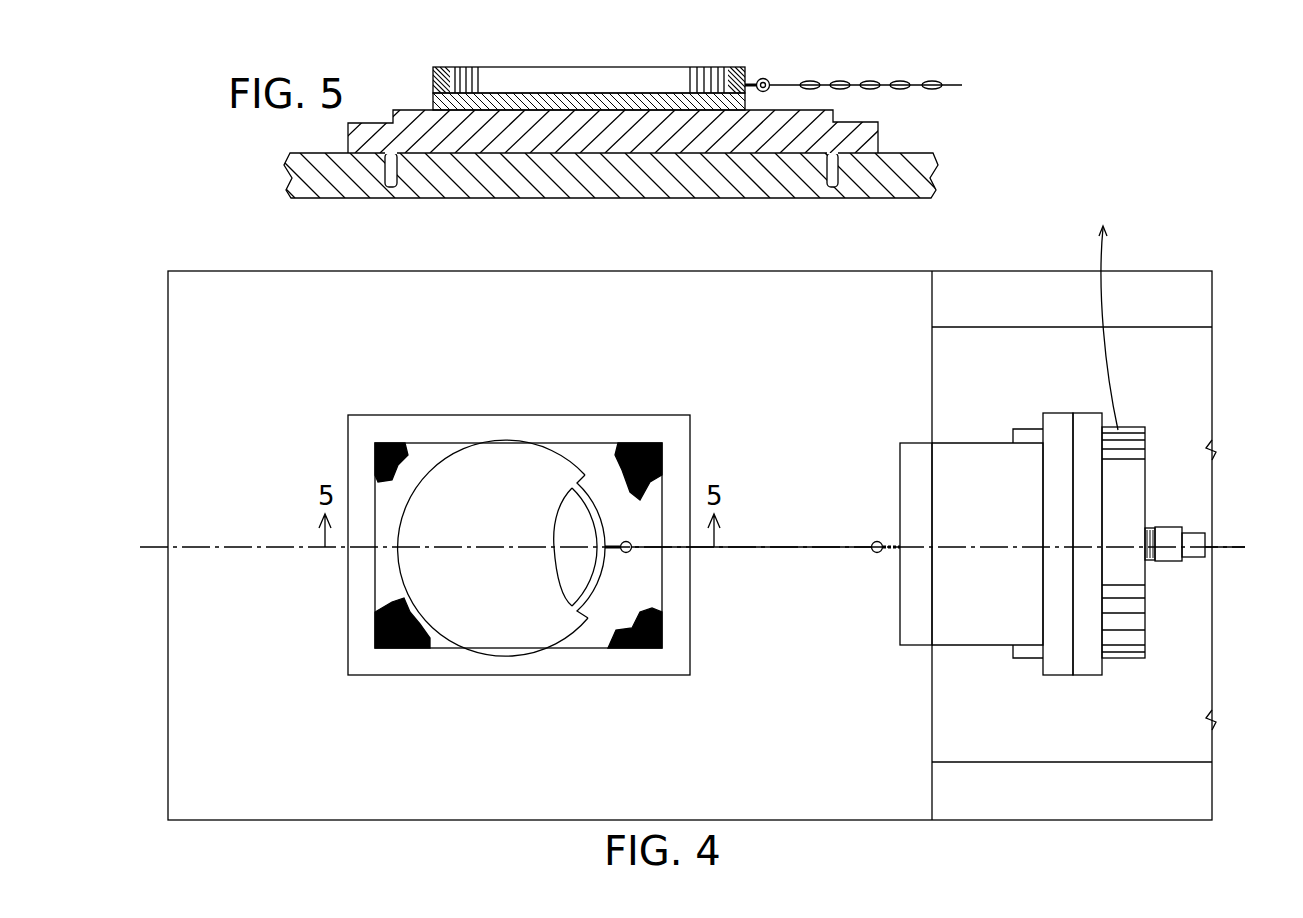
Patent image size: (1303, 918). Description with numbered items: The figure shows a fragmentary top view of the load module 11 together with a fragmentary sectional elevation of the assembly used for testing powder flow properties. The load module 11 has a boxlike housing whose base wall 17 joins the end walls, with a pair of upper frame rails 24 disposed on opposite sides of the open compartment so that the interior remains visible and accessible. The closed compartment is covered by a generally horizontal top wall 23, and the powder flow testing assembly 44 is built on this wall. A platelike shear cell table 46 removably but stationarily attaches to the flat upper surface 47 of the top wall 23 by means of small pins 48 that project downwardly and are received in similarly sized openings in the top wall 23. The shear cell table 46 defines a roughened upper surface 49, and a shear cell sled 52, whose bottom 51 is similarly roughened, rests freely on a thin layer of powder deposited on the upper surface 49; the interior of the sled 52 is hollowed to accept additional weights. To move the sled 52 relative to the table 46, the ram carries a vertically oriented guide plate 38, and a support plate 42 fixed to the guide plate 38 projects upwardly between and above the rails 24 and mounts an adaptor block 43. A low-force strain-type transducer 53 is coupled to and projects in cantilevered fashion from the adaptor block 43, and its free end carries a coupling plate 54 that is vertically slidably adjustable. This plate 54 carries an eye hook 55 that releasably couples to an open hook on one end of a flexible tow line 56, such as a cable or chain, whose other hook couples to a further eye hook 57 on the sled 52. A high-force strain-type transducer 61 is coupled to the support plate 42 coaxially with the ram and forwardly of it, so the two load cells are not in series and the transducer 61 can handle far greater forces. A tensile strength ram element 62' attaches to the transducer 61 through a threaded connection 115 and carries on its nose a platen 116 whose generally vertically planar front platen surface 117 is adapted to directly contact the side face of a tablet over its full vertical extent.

In FIG. 4, the load module 11 is at (232, 260).
In FIG. 4, the base wall 17 is at (1135, 740).
In FIG. 5, the top wall 23 is at (628, 194).
In FIG. 4, the upper frame rails 24 is at (1060, 292).
In FIG. 4, the guide plate 38 is at (1023, 660).
In FIG. 4, the support plate 42 is at (1088, 424).
In FIG. 4, the adaptor block 43 is at (1061, 424).
In FIG. 4, the powder flow testing assembly 44 is at (710, 432).
In FIG. 5, the shear cell table 46 is at (878, 137).
In FIG. 4, the shear cell table 46 is at (441, 418).
In FIG. 5, the upper surface 47 is at (306, 152).
In FIG. 4, the upper surface 47 is at (196, 416).
In FIG. 5, the pins 48 is at (832, 180).
In FIG. 5, the upper surface 49 is at (542, 107).
In FIG. 4, the upper surface 49 is at (621, 450).
In FIG. 5, the bottom 51 is at (450, 118).
In FIG. 5, the shear cell sled 52 is at (433, 80).
In FIG. 4, the shear cell sled 52 is at (601, 500).
In FIG. 4, the low-force strain-type transducer 53 is at (970, 465).
In FIG. 4, the coupling plate 54 is at (901, 475).
In FIG. 4, the eye hook 55 is at (880, 542).
In FIG. 5, the tow line 56 is at (905, 80).
In FIG. 4, the tow line 56 is at (768, 546).
In FIG. 5, the eye hook 57 is at (763, 79).
In FIG. 4, the eye hook 57 is at (620, 541).
In FIG. 4, the high-force strain-type transducer 61 is at (1133, 478).
In FIG. 4, the tensile strength ram element 62' is at (1187, 527).
In FIG. 4, the threaded connection 115 is at (1148, 528).
In FIG. 4, the platen 116 is at (1195, 560).
In FIG. 4, the front platen surface 117 is at (1210, 549).